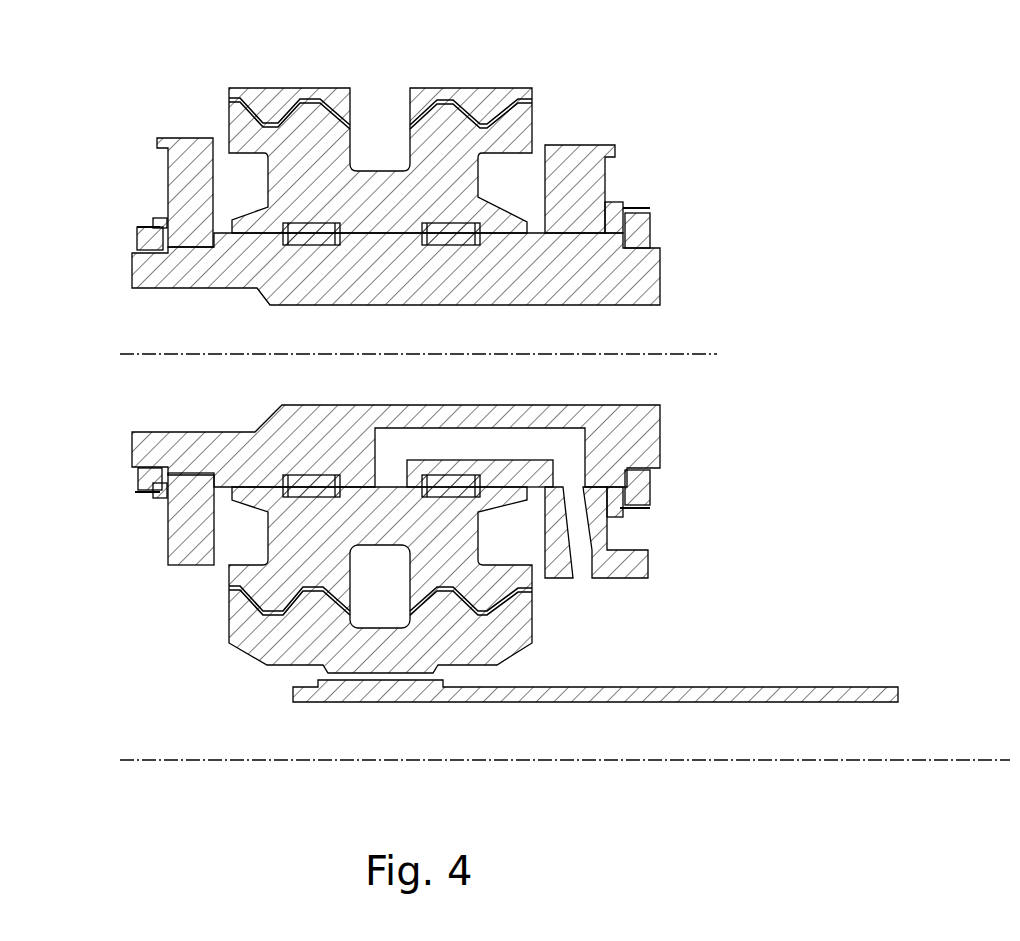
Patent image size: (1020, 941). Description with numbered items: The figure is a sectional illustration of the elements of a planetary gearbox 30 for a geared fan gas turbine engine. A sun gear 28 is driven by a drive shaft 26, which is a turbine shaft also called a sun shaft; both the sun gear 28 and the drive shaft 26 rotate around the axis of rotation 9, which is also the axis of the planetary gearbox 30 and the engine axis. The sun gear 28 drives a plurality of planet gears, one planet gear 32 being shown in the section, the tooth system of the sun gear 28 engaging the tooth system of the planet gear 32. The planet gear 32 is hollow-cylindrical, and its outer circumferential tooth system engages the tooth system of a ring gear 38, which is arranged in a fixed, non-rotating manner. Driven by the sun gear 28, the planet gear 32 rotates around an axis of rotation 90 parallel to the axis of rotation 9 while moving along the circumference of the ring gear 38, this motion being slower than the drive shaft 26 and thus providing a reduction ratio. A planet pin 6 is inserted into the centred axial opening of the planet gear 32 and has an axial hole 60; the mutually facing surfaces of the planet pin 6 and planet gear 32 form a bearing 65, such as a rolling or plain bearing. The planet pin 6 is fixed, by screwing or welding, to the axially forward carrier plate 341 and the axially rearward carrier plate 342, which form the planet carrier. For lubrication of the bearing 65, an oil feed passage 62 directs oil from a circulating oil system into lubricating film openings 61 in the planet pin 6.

The planet pin 6 is at (633, 278).
The axis of rotation 9 is at (335, 762).
The drive shaft 26 is at (573, 695).
The sun gear 28 is at (497, 652).
The planetary gearbox 30 is at (90, 226).
The planet gear 32 is at (520, 123).
The ring gear 38 is at (487, 105).
The axial hole 60 is at (648, 335).
The lubricating film openings 61 is at (478, 443).
The oil feed passage 62 is at (581, 557).
The bearing 65 is at (380, 236).
The axis of rotation 90 is at (697, 356).
The axially forward carrier plate 341 is at (183, 174).
The axially rearward carrier plate 342 is at (590, 182).